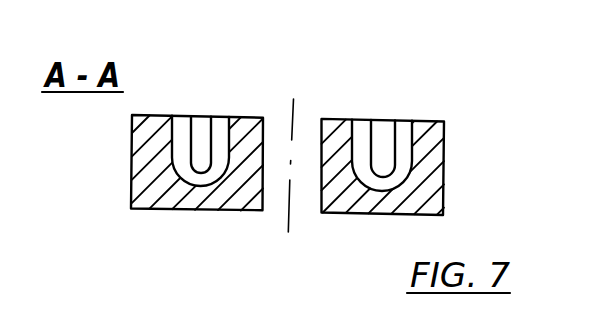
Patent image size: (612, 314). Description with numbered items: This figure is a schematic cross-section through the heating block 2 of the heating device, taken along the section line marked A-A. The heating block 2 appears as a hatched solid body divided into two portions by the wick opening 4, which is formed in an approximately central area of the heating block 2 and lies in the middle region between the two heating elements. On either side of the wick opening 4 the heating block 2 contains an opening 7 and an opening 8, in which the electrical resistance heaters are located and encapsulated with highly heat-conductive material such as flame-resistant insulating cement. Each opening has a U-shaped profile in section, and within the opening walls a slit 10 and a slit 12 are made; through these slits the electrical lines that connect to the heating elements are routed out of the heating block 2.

The heating block 2 is at (431, 122).
The wick opening 4 is at (312, 138).
The opening 7 is at (222, 151).
The opening 8 is at (404, 151).
The slit 10 is at (200, 128).
The slit 12 is at (382, 140).